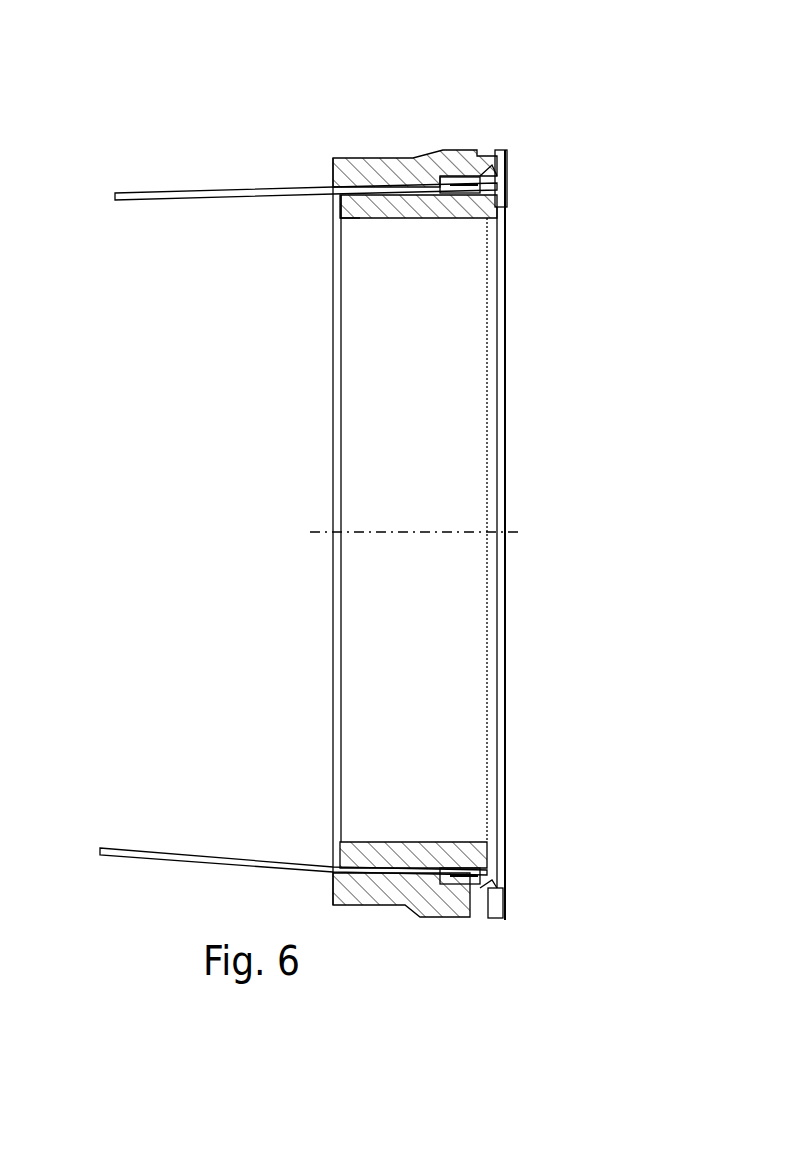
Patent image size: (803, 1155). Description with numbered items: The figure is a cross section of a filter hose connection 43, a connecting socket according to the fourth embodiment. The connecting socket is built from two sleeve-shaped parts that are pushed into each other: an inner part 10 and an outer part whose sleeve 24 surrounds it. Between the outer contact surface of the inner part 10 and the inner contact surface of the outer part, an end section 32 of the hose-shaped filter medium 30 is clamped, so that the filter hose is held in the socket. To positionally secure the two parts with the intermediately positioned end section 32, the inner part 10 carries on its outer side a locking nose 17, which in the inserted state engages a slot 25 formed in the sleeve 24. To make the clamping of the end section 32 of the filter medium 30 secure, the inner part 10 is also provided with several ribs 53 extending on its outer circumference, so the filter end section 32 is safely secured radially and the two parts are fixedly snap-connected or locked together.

The filter hose connection 43 is at (142, 115).
The sleeve 24 is at (392, 157).
The ribs 53 is at (438, 192).
The slot 25 is at (485, 155).
The locking nose 17 is at (498, 175).
The filter medium 30 is at (152, 200).
The end section 32 is at (352, 209).
The inner part 10 is at (423, 220).